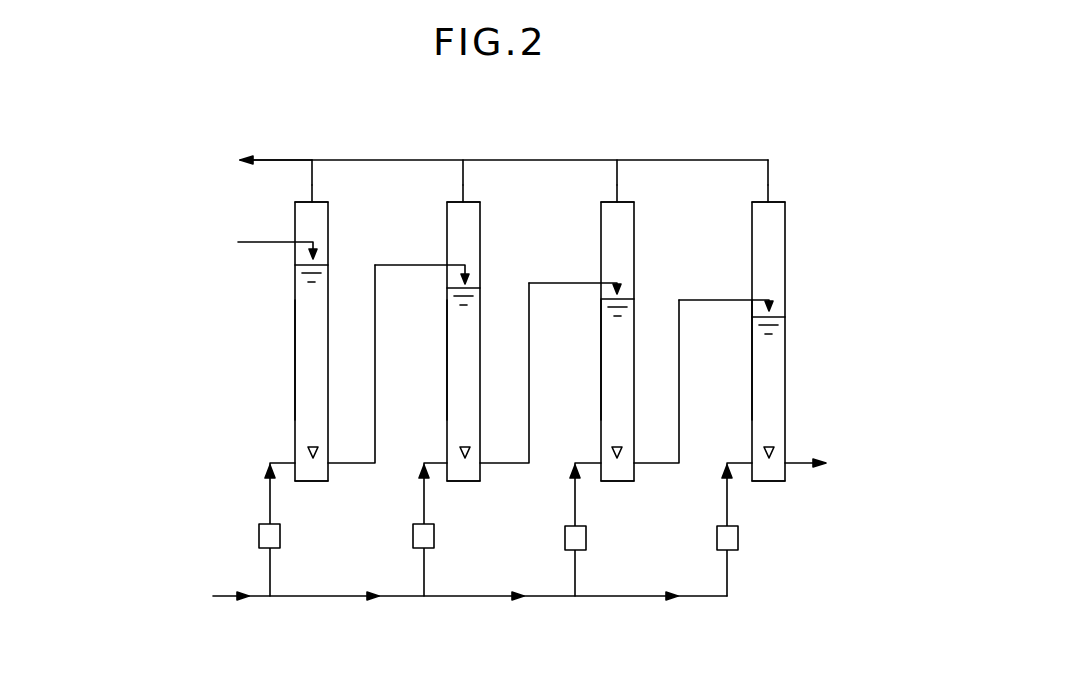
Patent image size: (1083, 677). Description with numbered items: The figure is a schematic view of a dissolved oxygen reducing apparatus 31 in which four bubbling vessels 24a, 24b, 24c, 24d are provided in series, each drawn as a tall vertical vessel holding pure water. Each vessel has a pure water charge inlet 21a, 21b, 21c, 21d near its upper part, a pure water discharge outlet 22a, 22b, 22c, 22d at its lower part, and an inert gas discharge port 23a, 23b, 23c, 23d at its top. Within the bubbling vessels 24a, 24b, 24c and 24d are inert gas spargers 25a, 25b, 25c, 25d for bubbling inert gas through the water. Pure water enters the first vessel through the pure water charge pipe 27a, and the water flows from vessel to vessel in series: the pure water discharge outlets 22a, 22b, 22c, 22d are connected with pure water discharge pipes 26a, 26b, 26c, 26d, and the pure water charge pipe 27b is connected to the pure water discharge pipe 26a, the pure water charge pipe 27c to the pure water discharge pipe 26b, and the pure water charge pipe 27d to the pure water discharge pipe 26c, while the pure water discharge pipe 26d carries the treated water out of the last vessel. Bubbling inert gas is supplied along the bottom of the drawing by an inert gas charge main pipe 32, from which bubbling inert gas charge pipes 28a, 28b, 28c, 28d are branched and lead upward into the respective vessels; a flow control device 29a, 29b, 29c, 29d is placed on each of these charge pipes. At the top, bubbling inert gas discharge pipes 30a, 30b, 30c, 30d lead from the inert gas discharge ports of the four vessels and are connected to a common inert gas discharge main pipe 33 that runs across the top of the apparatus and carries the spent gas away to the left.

The pure water charge inlet 21a is at (294, 249).
The pure water charge inlet 21b is at (447, 266).
The pure water charge inlet 21c is at (601, 284).
The pure water charge inlet 21d is at (751, 300).
The pure water discharge outlet 22a is at (334, 484).
The pure water discharge outlet 22b is at (486, 484).
The pure water discharge outlet 22c is at (654, 486).
The pure water discharge outlet 22d is at (792, 483).
The inert gas discharge port 23a is at (317, 200).
The inert gas discharge port 23b is at (466, 200).
The inert gas discharge port 23c is at (620, 200).
The inert gas discharge port 23d is at (771, 200).
The bubbling vessel 24a is at (285, 358).
The bubbling vessel 24b is at (438, 345).
The bubbling vessel 24c is at (590, 357).
The bubbling vessel 24d is at (740, 359).
The inert gas sparger 25a is at (313, 447).
The inert gas sparger 25b is at (465, 447).
The inert gas sparger 25c is at (617, 447).
The inert gas sparger 25d is at (770, 447).
The pure water discharge pipe 26a is at (333, 465).
The pure water discharge pipe 26b is at (530, 440).
The pure water discharge pipe 26c is at (680, 445).
The pure water discharge pipe 26d is at (803, 463).
The pure water charge pipe 27a is at (281, 242).
The pure water charge pipe 27b is at (400, 265).
The pure water charge pipe 27c is at (553, 283).
The pure water charge pipe 27d is at (713, 299).
The bubbling inert gas charge pipe 28a is at (271, 573).
The bubbling inert gas charge pipe 28b is at (425, 573).
The bubbling inert gas charge pipe 28c is at (577, 583).
The bubbling inert gas charge pipe 28d is at (729, 578).
The flow control device 29a is at (262, 524).
The flow control device 29b is at (456, 520).
The flow control device 29c is at (587, 538).
The flow control device 29d is at (740, 538).
The bubbling inert gas discharge pipe 30a is at (311, 177).
The bubbling inert gas discharge pipe 30b is at (462, 178).
The bubbling inert gas discharge pipe 30c is at (616, 178).
The bubbling inert gas discharge pipe 30d is at (767, 178).
The dissolved oxygen reducing apparatus 31 is at (505, 127).
The inert gas charge main pipe 32 is at (218, 596).
The inert gas discharge main pipe 33 is at (291, 158).